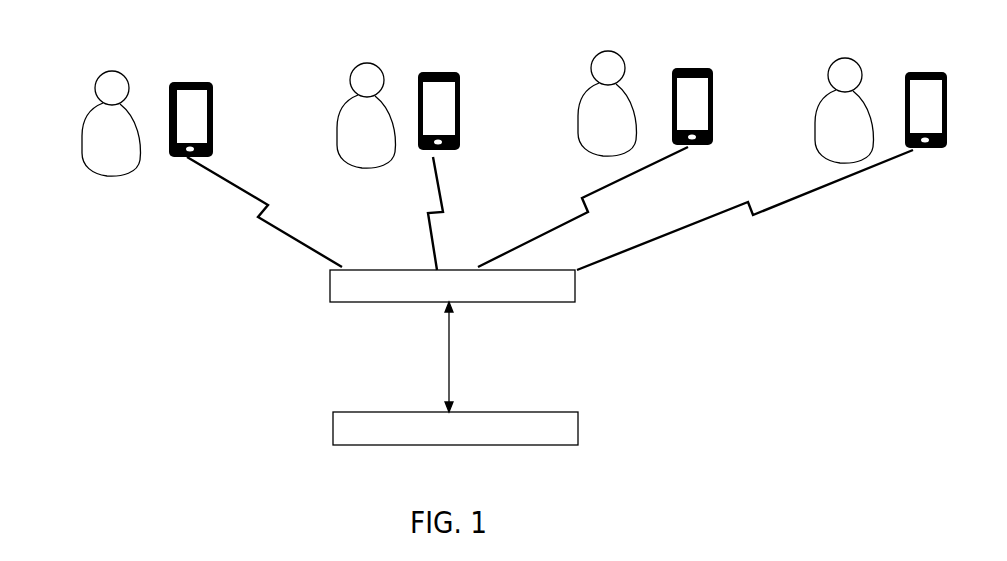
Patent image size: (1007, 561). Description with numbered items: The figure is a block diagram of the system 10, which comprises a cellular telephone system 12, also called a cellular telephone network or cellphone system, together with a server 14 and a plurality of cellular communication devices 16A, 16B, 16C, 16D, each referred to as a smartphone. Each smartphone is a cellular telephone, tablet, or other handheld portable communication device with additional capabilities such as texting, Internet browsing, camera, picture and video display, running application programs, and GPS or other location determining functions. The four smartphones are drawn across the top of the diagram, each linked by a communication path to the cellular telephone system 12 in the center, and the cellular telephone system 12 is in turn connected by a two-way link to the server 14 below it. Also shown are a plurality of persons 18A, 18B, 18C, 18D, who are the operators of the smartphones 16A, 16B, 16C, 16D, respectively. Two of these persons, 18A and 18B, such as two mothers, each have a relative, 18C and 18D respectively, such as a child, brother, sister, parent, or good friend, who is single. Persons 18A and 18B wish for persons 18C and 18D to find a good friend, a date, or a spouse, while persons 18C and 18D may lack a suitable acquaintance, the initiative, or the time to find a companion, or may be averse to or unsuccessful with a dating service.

The system 10 is at (128, 270).
The cellular telephone system 12 is at (327, 290).
The server 14 is at (330, 425).
The cellular communication device 16A is at (183, 78).
The cellular communication device 16B is at (432, 67).
The cellular communication device 16C is at (672, 68).
The cellular communication device 16D is at (902, 70).
The person 18A is at (95, 77).
The person 18B is at (360, 65).
The person 18C is at (602, 55).
The person 18D is at (837, 62).